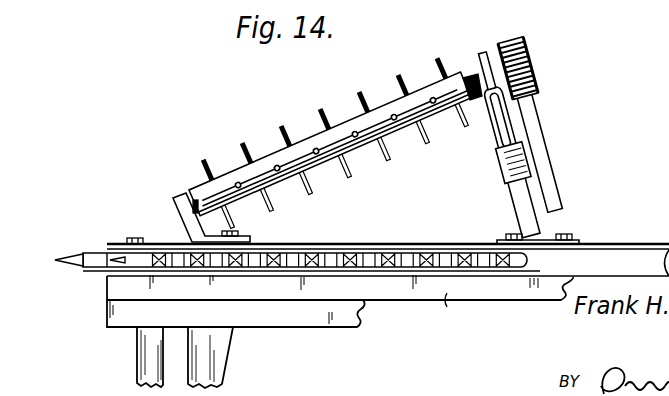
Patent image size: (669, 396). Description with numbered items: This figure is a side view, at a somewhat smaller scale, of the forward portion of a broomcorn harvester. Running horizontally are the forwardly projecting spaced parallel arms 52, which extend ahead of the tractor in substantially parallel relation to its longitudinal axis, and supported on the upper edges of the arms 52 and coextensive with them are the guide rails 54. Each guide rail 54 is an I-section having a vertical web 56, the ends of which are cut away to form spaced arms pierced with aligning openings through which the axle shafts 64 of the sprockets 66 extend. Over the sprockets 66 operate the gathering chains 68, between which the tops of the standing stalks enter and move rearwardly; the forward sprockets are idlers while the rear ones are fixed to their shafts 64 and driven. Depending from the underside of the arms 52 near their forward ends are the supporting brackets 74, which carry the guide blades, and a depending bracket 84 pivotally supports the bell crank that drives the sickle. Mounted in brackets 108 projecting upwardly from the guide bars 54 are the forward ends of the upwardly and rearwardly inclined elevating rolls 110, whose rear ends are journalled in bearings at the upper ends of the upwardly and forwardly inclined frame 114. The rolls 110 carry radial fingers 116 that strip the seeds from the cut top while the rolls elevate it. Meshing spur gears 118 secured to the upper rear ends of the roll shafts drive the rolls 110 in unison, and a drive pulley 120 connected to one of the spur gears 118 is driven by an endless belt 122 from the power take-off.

The forwardly projecting arms 52 is at (448, 296).
The guide rails 54 is at (601, 246).
The vertical web 56 is at (621, 263).
The axle shafts 64 is at (137, 236).
The sprockets 66 is at (112, 266).
The gathering chains 68 is at (250, 268).
The supporting brackets 74 is at (147, 365).
The depending bracket 84 is at (225, 355).
The brackets 108 is at (188, 198).
The elevating rolls 110 is at (305, 145).
The frame 114 is at (486, 135).
The radial fingers 116 is at (396, 75).
The spur gears 118 is at (514, 40).
The drive pulley 120 is at (485, 72).
The endless belt 122 is at (523, 122).